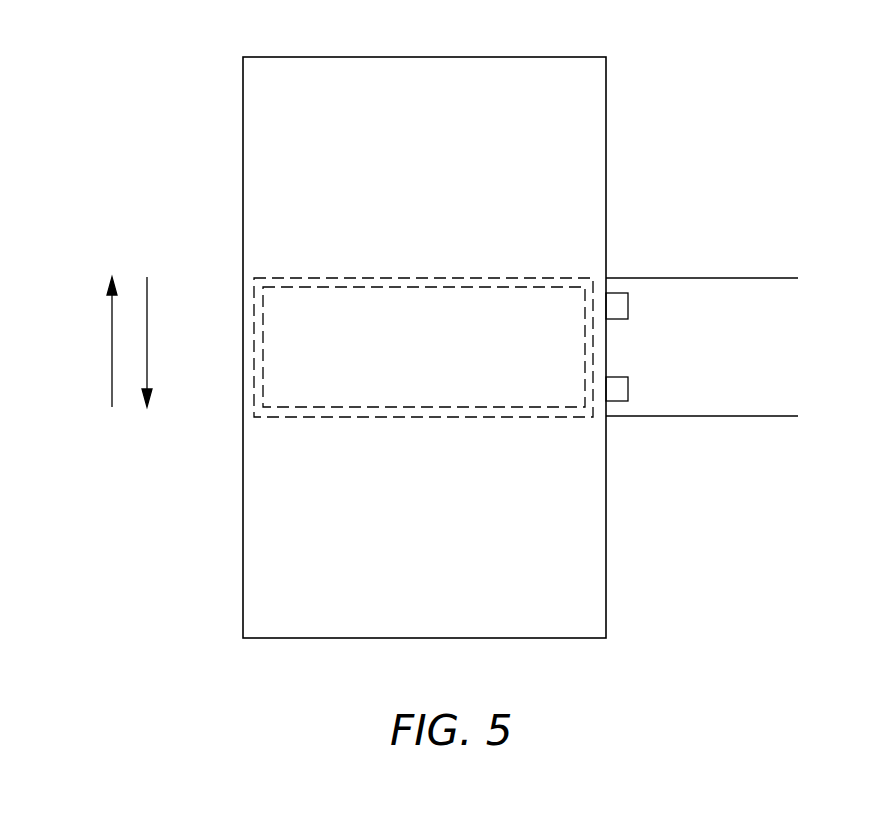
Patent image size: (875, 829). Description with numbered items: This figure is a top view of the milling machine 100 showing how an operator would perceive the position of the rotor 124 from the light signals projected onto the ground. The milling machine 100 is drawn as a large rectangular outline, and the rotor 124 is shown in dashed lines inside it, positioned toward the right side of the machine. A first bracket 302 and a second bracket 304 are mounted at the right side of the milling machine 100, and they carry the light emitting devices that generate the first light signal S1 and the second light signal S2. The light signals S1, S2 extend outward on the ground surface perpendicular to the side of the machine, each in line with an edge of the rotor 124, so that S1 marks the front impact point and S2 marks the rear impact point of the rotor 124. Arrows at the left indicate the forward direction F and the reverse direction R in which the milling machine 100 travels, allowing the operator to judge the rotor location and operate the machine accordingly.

The milling machine 100 is at (686, 62).
The rotor 124 is at (560, 268).
The first bracket 302 is at (628, 306).
The second bracket 304 is at (628, 388).
The first light signal S1 is at (735, 278).
The second light signal S2 is at (735, 416).
The forward direction F is at (112, 350).
The reverse direction R is at (147, 350).